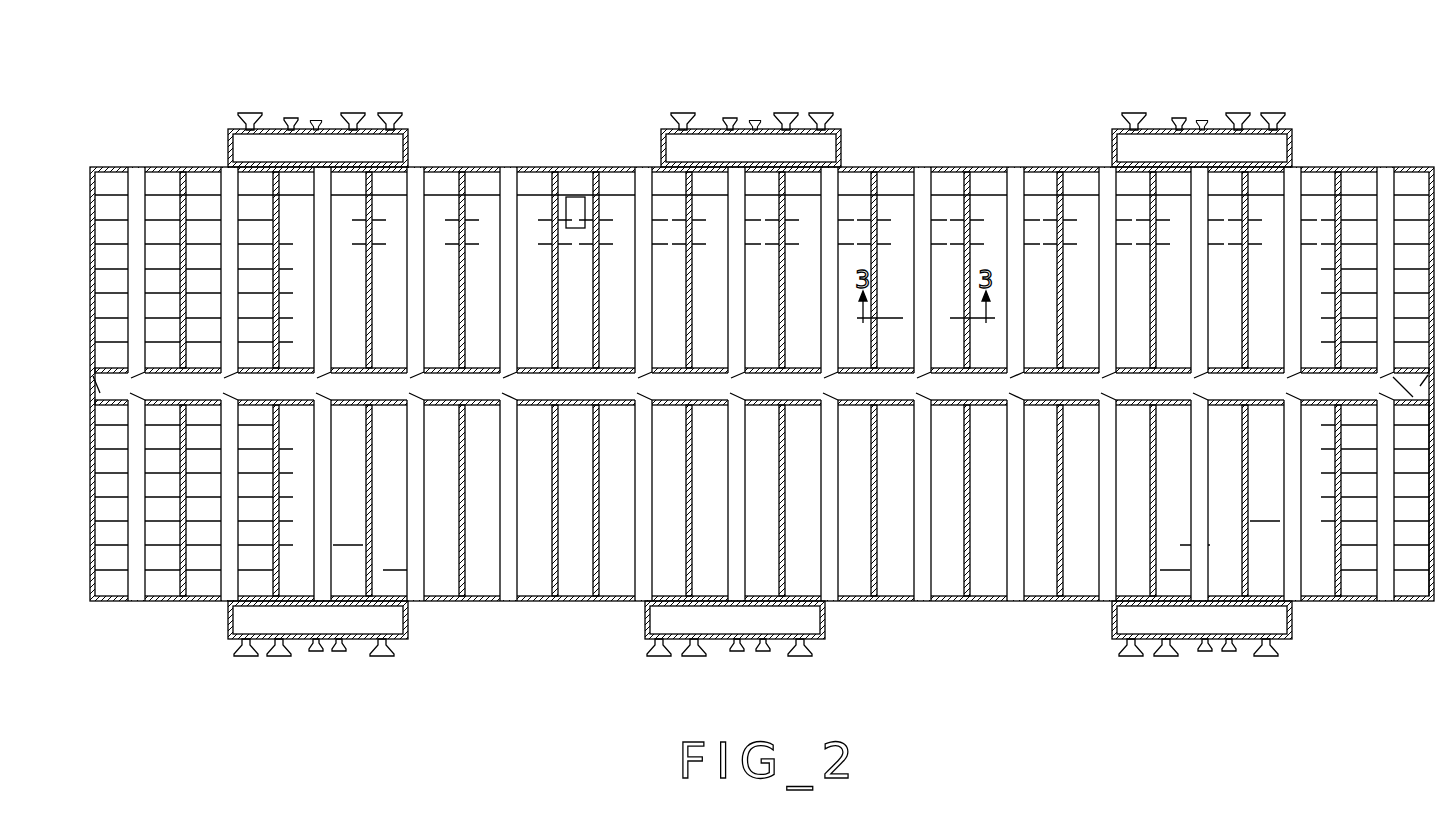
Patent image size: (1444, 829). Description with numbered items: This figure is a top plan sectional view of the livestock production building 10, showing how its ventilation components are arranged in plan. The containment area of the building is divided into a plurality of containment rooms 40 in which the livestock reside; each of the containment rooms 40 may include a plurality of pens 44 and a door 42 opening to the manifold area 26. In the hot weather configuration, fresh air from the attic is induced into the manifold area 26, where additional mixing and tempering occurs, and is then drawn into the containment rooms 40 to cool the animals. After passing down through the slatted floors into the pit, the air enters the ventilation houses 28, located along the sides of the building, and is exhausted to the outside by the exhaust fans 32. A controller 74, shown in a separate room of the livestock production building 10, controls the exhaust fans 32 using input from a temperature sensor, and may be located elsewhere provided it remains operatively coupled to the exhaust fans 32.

The livestock production building 10 is at (1413, 153).
The manifold area 26 is at (1410, 392).
The ventilation houses 28 is at (383, 152).
The exhaust fans 32 is at (316, 122).
The containment rooms 40 is at (112, 253).
The door 42 is at (135, 395).
The pens 44 is at (117, 567).
The controller 74 is at (577, 197).